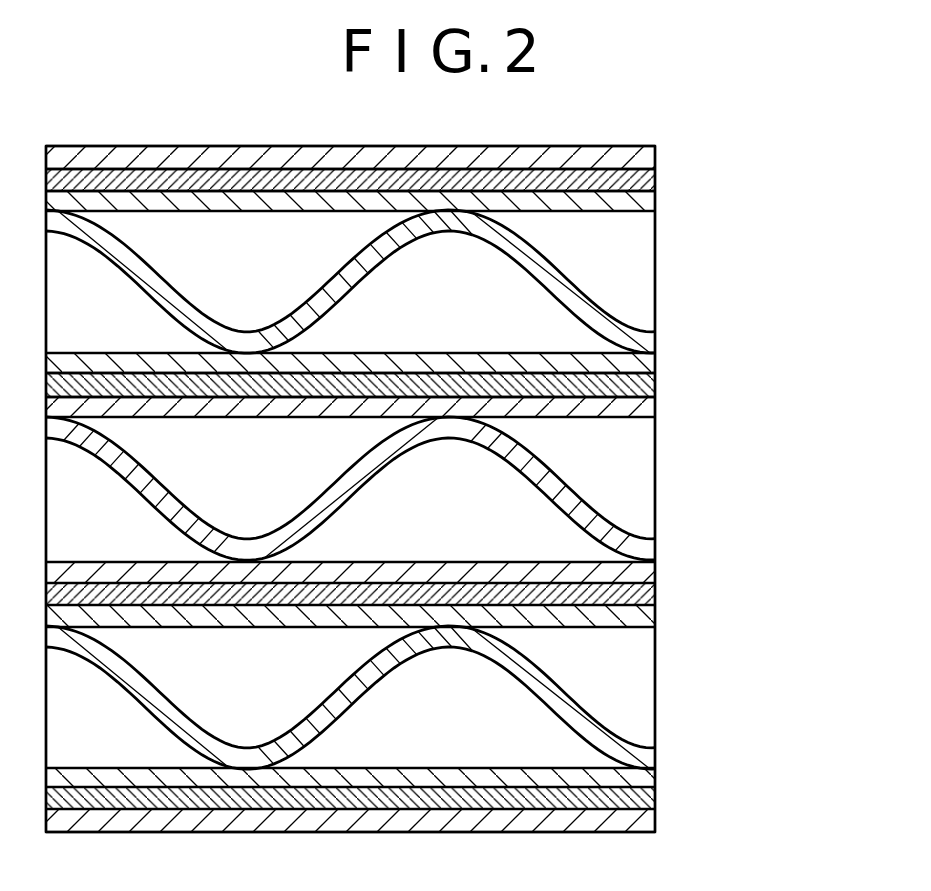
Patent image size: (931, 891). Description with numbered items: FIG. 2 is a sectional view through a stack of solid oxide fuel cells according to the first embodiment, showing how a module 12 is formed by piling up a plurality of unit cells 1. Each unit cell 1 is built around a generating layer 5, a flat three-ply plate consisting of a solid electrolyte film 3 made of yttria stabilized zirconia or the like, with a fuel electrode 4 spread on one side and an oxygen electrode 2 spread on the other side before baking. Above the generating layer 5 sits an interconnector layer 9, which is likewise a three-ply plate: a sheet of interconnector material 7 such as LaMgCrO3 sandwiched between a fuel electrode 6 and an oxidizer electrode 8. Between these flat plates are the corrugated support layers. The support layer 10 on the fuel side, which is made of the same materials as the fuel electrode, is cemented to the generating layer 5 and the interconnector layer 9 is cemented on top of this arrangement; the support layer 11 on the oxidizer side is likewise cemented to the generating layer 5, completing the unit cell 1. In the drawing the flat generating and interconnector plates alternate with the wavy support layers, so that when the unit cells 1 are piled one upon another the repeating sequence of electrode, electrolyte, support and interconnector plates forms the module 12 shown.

The unit cell 1 is at (813, 547).
The oxygen electrode 2 is at (381, 422).
The solid electrolyte film 3 is at (645, 388).
The fuel electrode 4 is at (645, 363).
The generating layer 5 is at (417, 393).
The fuel electrode 6 is at (381, 214).
The interconnector material 7 is at (645, 182).
The oxidizer electrode 8 is at (645, 155).
The interconnector layer 9 is at (417, 179).
The support layer on the fuel side 10 is at (645, 327).
The support layer on the oxidizer side 11 is at (647, 537).
The module 12 is at (688, 668).